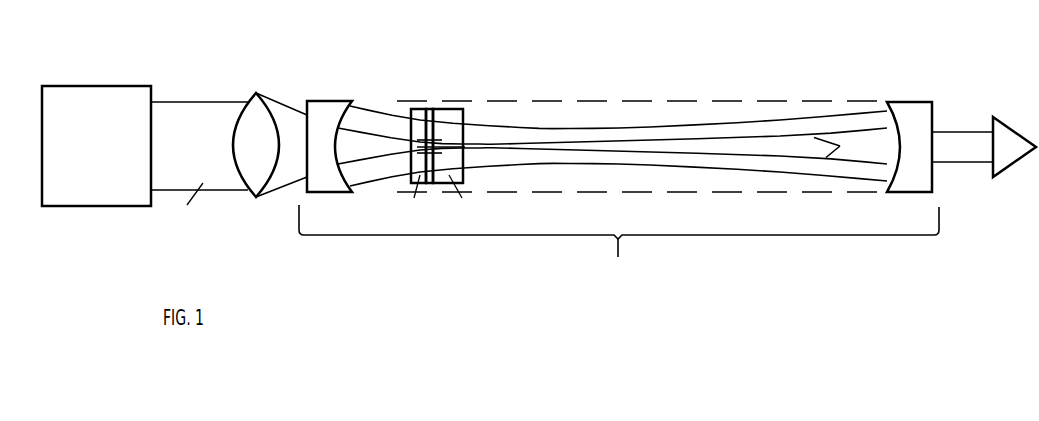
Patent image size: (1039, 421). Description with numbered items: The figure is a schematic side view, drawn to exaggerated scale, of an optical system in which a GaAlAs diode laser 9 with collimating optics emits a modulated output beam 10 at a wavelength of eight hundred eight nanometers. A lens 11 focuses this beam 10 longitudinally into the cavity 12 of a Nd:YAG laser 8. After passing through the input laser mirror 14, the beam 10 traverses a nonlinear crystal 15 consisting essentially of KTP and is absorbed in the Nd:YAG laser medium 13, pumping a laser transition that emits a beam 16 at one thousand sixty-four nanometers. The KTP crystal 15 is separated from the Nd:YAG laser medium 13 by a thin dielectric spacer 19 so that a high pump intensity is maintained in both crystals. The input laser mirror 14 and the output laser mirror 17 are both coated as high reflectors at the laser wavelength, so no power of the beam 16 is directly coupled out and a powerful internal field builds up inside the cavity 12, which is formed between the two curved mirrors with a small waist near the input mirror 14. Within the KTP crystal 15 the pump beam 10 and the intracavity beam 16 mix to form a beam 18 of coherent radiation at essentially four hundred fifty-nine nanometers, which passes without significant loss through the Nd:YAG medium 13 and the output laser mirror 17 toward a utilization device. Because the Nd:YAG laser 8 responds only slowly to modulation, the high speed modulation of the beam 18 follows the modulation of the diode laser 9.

The Nd:YAG laser 8 is at (619, 248).
The GaAlAs diode laser 9 is at (103, 197).
The output beam 10 is at (229, 163).
The lens 11 is at (263, 152).
The cavity 12 is at (545, 101).
The Nd:YAG laser medium 13 is at (448, 108).
The input laser mirror 14 is at (330, 152).
The nonlinear crystal 15 is at (418, 108).
The beam 16 is at (388, 113).
The output laser mirror 17 is at (909, 147).
The beam 18 is at (980, 157).
The spacer 19 is at (430, 108).